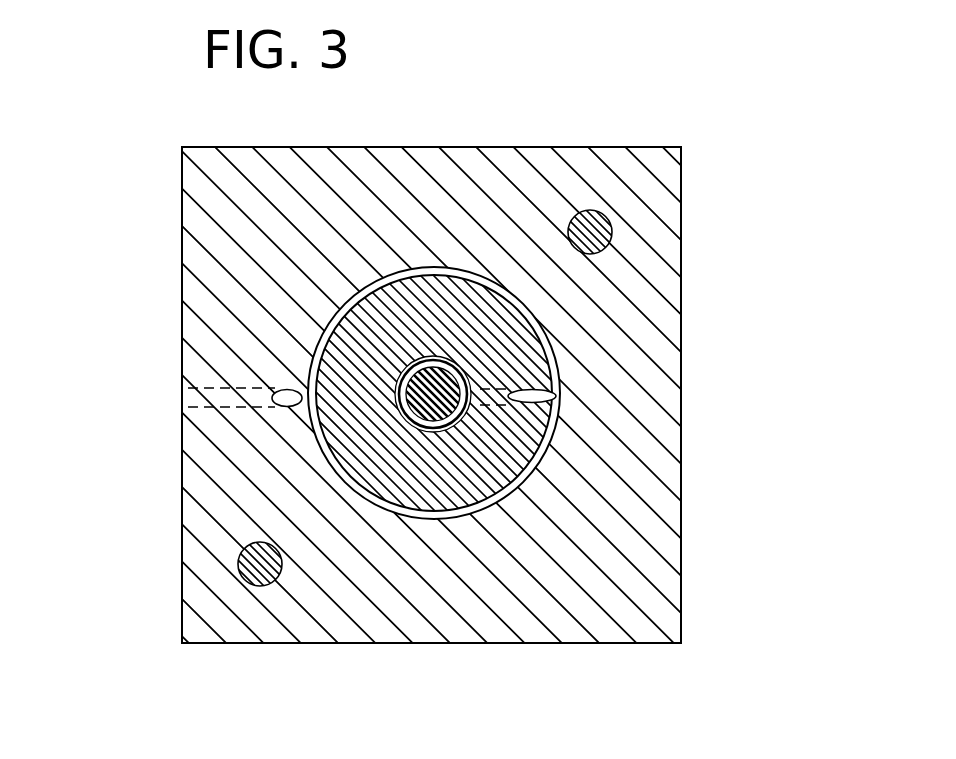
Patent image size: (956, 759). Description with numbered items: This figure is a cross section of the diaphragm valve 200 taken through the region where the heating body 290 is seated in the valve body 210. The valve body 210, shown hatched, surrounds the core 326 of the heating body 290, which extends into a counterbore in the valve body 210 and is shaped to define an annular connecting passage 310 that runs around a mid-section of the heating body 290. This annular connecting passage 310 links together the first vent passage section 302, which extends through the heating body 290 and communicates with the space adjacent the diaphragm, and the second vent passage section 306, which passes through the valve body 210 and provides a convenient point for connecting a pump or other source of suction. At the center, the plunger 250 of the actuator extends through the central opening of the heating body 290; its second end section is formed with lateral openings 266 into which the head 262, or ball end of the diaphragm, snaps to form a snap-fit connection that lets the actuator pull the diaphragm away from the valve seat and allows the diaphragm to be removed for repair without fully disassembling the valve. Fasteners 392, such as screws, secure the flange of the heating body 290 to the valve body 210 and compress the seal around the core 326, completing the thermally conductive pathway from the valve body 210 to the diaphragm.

The diaphragm valve 200 is at (152, 170).
The valve body 210 is at (653, 268).
The fasteners 392 is at (609, 222).
The annular connecting passage 310 is at (505, 490).
The core 326 is at (487, 395).
The heating body 290 is at (524, 354).
The second vent passage section 306 is at (297, 400).
The first vent passage section 302 is at (557, 395).
The plunger 250 is at (447, 378).
The lateral openings 266 is at (433, 427).
The head 262 is at (438, 430).